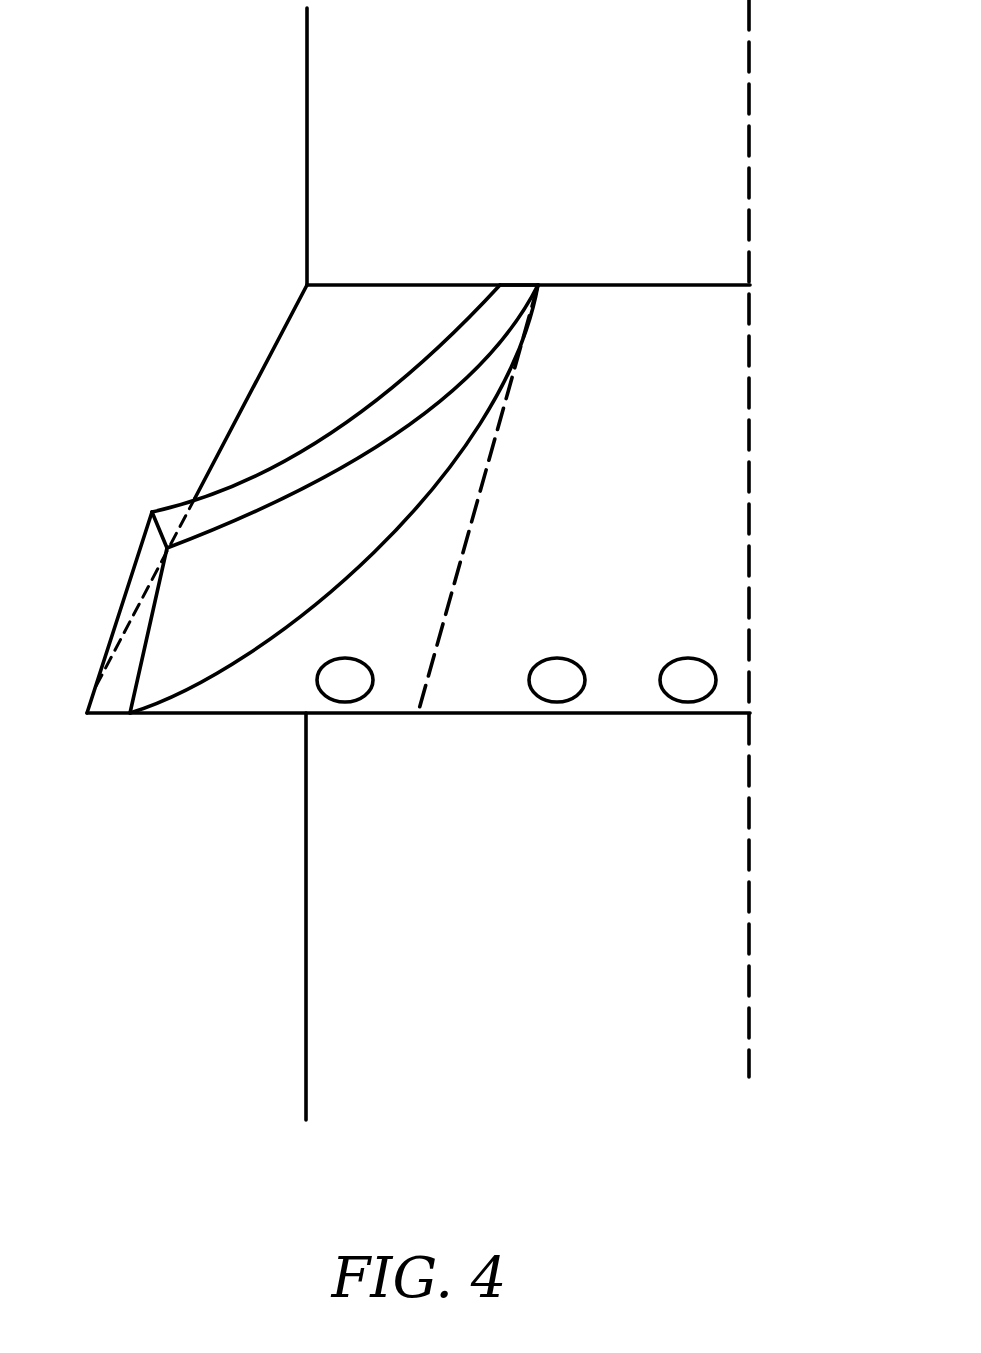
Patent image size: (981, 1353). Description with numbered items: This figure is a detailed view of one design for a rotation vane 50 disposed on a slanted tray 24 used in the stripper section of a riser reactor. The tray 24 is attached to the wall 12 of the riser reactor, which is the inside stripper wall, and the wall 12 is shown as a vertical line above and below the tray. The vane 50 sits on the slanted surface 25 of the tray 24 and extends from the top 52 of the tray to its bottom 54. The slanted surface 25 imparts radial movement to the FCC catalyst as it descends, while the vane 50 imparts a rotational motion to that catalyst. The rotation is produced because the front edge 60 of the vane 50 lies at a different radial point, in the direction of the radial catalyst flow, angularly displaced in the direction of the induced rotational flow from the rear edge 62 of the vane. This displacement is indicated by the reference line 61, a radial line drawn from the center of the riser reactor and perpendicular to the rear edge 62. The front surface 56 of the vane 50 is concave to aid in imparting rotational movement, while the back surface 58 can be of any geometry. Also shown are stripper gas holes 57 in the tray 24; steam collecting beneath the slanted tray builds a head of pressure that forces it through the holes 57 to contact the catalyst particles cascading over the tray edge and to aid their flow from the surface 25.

The wall 12 is at (307, 120).
The tray 24 is at (652, 444).
The surface 25 is at (312, 343).
The rotation vane 50 is at (274, 592).
The top 52 is at (402, 283).
The bottom 54 is at (520, 715).
The front surface 56 is at (362, 413).
The stripper gas holes 57 is at (350, 658).
The back surface 58 is at (383, 522).
The front edge 60 is at (97, 687).
The reference line 61 is at (445, 625).
The rear edge 62 is at (523, 283).